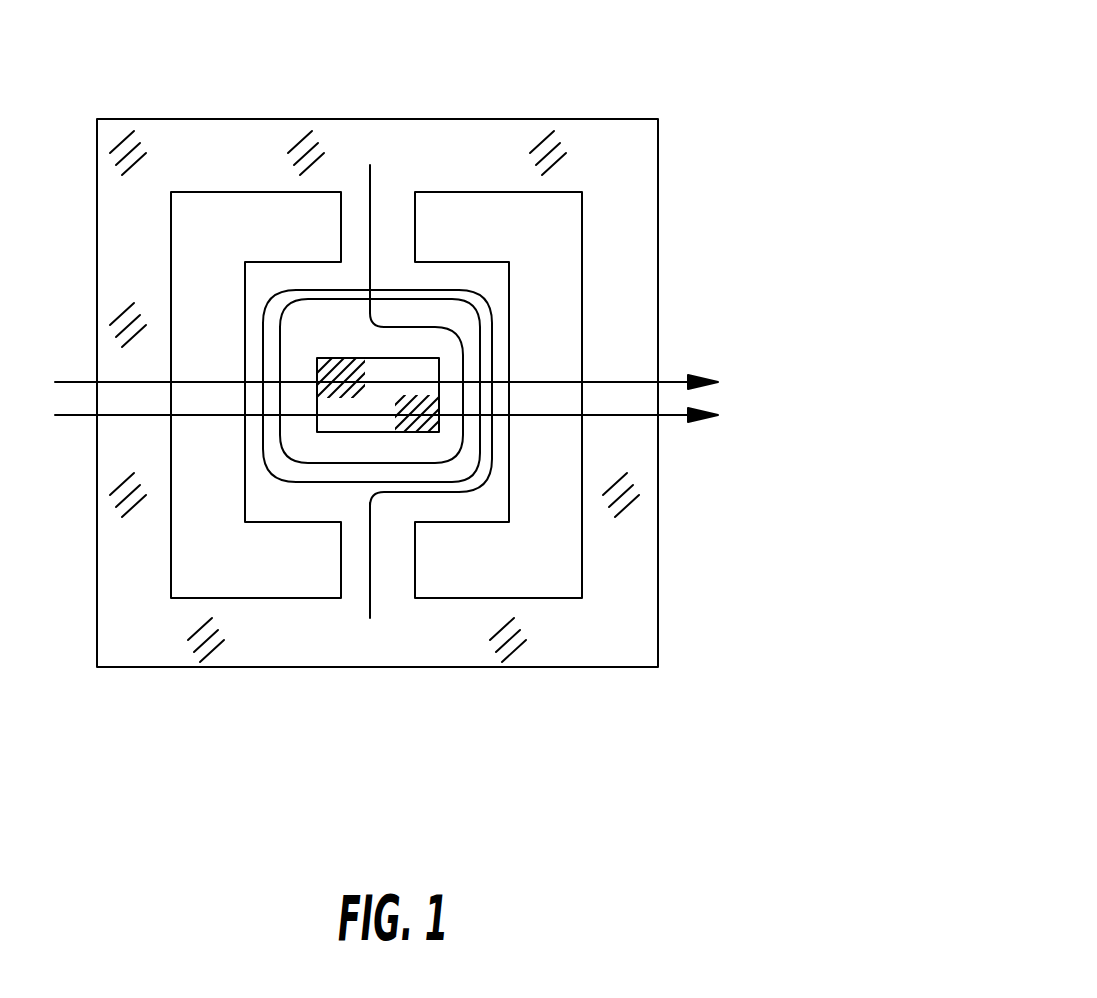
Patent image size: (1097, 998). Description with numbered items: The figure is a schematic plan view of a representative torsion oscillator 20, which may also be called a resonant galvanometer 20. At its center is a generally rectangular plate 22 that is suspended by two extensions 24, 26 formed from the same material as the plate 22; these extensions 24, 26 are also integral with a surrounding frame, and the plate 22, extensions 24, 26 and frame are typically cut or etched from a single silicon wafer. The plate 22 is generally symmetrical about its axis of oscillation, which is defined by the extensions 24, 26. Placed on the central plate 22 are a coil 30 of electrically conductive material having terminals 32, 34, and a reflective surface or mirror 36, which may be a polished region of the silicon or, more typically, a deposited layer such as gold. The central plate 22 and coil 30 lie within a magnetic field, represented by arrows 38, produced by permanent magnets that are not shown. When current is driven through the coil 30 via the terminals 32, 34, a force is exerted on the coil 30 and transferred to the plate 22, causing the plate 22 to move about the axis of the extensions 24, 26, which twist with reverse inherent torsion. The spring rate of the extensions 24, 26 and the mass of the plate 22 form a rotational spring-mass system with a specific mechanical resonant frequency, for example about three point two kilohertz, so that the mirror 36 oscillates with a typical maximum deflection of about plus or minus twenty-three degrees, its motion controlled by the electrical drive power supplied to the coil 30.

The torsion oscillator 20 is at (826, 70).
The central plate 22 is at (487, 503).
The extension 24 is at (393, 217).
The extension 26 is at (392, 578).
The coil 30 is at (485, 310).
The terminal 32 is at (367, 190).
The terminal 34 is at (370, 603).
The mirror 36 is at (362, 428).
The arrows representing magnetic field 38 is at (628, 328).